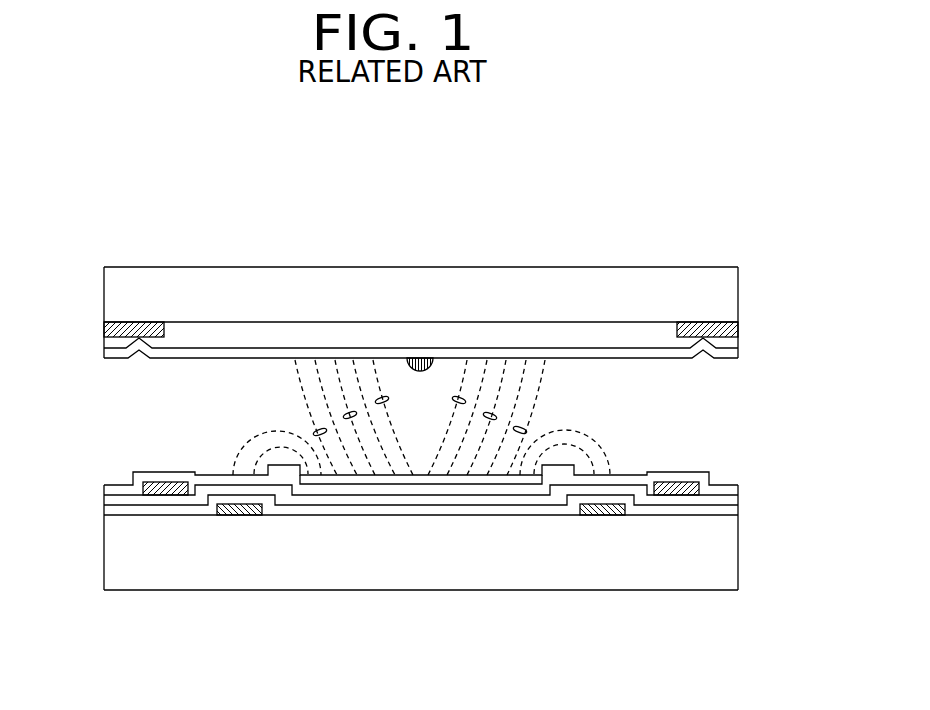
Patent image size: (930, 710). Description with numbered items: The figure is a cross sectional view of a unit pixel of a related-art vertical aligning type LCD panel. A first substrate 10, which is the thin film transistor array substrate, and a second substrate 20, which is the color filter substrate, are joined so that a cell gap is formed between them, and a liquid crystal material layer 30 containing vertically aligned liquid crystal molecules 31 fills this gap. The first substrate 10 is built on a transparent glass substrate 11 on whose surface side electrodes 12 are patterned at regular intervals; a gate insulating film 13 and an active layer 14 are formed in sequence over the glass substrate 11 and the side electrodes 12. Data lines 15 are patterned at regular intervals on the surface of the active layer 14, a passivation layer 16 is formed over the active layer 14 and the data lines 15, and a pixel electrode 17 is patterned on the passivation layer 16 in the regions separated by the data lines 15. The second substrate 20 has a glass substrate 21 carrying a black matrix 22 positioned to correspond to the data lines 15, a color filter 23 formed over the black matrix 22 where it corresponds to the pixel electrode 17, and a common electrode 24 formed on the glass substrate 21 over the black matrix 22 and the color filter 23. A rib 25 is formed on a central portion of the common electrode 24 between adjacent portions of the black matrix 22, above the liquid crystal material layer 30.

The first substrate 10 is at (88, 487).
The transparent glass substrate 11 is at (534, 556).
The side electrodes 12 is at (234, 517).
The gate insulating film 13 is at (465, 507).
The active layer 14 is at (421, 497).
The data lines 15 is at (158, 493).
The passivation layer 16 is at (384, 476).
The pixel electrode 17 is at (344, 477).
The second substrate 20 is at (88, 270).
The glass substrate 21 is at (541, 292).
The black matrix 22 is at (133, 325).
The color filter 23 is at (392, 332).
The common electrode 24 is at (499, 350).
The rib 25 is at (421, 356).
The liquid crystal material layer 30 is at (722, 430).
The liquid crystal molecules 31 is at (496, 413).